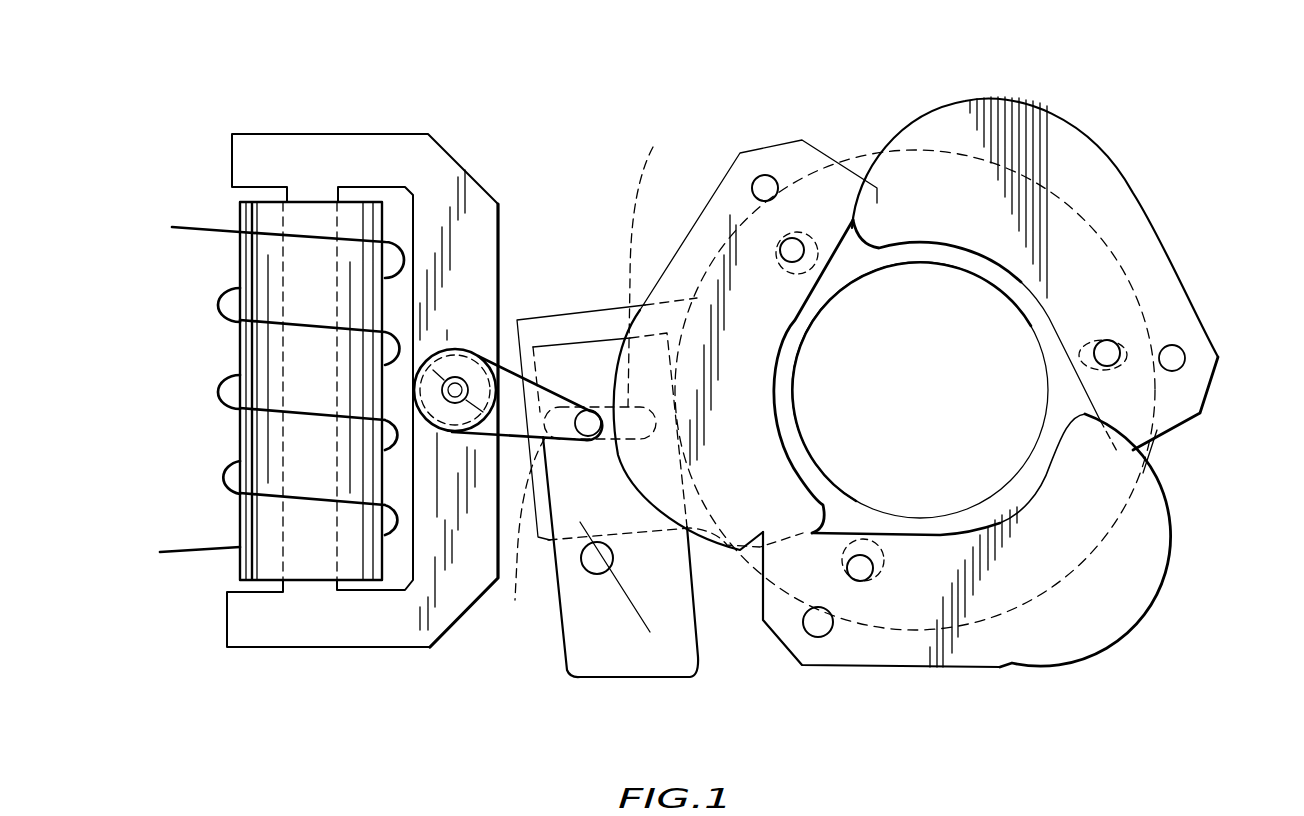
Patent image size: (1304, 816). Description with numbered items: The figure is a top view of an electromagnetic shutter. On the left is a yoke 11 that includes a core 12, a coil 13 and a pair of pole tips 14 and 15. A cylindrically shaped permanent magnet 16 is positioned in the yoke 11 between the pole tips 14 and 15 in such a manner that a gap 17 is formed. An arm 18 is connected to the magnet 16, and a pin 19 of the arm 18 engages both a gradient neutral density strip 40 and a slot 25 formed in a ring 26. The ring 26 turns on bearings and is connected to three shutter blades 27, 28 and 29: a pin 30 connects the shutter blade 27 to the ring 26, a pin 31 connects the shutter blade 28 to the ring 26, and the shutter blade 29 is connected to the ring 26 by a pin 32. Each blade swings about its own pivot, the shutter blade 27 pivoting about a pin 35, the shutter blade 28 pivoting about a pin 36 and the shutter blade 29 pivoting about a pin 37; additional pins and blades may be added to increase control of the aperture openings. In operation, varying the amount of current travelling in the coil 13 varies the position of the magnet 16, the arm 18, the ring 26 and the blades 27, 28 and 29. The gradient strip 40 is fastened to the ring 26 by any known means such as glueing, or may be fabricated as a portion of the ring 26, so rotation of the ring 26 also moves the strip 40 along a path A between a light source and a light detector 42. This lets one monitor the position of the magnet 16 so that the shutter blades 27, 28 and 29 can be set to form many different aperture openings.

The yoke 11 is at (295, 133).
The core 12 is at (283, 217).
The coil 13 is at (193, 546).
The pole tip 14 is at (455, 349).
The pole tip 15 is at (440, 440).
The permanent magnet 16 is at (470, 352).
The gap 17 is at (453, 430).
The arm 18 is at (547, 392).
The pin 19 is at (649, 471).
The slot 25 is at (602, 370).
The ring 26 is at (1157, 450).
The shutter blade 27 is at (1058, 110).
The shutter blade 28 is at (1117, 633).
The shutter blade 29 is at (720, 557).
The pin 30 is at (1227, 346).
The pin 31 is at (820, 640).
The pin 32 is at (765, 175).
The pin 35 is at (1113, 337).
The pin 36 is at (863, 587).
The pin 37 is at (803, 237).
The gradient neutral density strip 40 is at (690, 670).
The light detector 42 is at (592, 577).
The path A is at (640, 625).